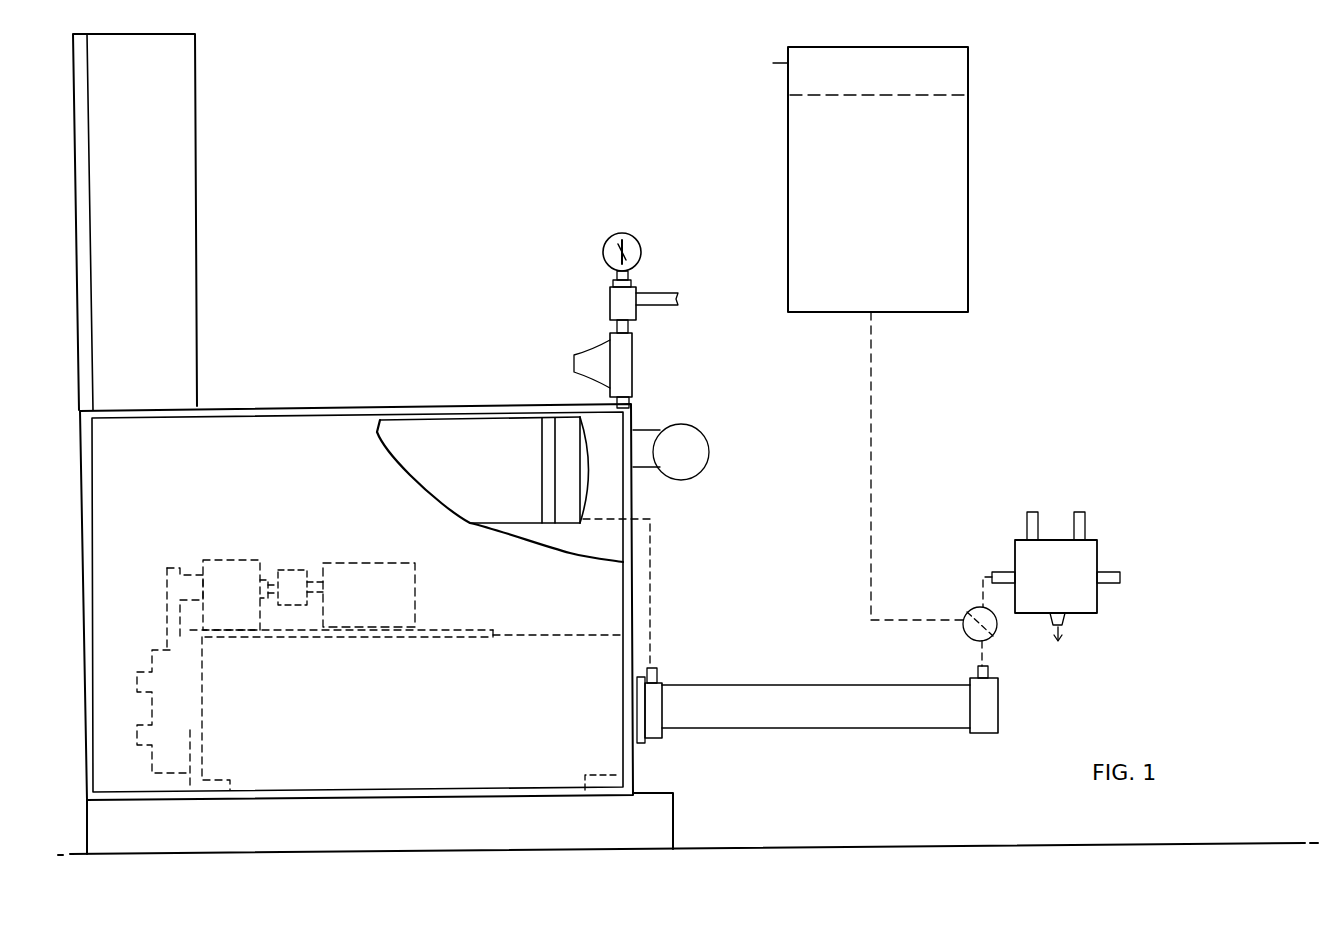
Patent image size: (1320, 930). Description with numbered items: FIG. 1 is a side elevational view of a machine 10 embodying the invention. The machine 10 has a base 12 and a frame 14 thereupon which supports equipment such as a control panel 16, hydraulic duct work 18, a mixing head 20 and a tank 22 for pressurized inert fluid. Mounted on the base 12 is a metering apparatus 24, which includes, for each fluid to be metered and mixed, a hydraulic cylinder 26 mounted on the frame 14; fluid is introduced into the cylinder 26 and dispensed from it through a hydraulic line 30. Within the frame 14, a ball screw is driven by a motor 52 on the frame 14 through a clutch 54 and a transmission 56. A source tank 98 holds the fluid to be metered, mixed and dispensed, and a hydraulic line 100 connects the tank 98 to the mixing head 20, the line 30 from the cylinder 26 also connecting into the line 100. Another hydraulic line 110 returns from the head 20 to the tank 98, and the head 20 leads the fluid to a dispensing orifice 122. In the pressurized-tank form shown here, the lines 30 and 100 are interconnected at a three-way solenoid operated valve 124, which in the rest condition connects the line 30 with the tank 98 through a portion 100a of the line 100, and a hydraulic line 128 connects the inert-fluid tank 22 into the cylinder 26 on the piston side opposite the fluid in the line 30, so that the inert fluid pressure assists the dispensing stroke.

The machine 10 is at (430, 247).
The base 12 is at (665, 820).
The frame 14 is at (628, 586).
The control panel 16 is at (185, 118).
The hydraulic duct work 18 is at (650, 275).
The mixing head 20 is at (1075, 497).
The tank 22 is at (464, 428).
The metering apparatus 24 is at (192, 535).
The hydraulic cylinder 26 is at (932, 722).
The hydraulic line 30 is at (998, 672).
The motor 52 is at (410, 598).
The clutch 54 is at (303, 570).
The transmission 56 is at (242, 566).
The tank 98 is at (962, 165).
The hydraulic line 100 is at (1004, 571).
The portion of line 100a is at (880, 438).
The hydraulic line 110 is at (1030, 520).
The dispensing orifice 122 is at (1068, 616).
The three-way solenoid operated valve 124 is at (975, 612).
The hydraulic line 128 is at (655, 552).